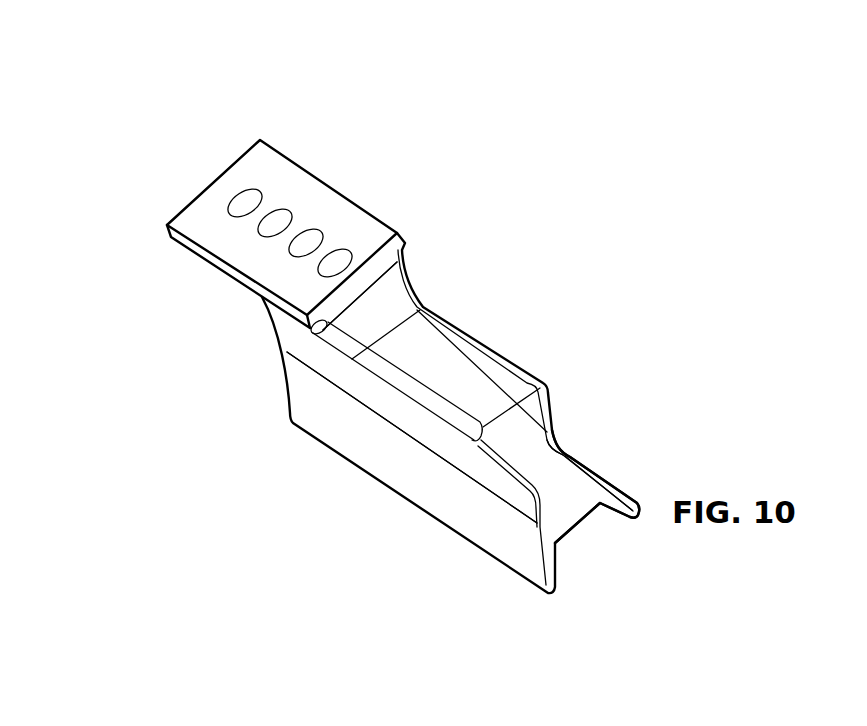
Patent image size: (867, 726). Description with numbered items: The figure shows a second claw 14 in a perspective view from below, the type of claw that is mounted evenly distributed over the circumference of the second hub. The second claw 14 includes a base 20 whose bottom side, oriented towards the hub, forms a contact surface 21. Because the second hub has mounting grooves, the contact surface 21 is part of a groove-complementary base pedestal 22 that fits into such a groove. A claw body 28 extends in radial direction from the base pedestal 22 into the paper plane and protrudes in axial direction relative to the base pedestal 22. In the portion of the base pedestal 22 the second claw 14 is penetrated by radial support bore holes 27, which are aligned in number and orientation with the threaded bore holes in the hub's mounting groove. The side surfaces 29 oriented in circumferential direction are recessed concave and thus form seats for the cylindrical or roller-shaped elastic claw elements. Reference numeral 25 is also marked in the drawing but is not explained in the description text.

The second claw 14 is at (660, 289).
The base 20 is at (226, 165).
The contact surface 21 is at (208, 222).
The base pedestal 22 is at (370, 300).
The adjacent member 25 is at (462, 0).
The support bore holes 27 is at (242, 205).
The claw body 28 is at (572, 548).
The side surfaces 29 is at (578, 447).